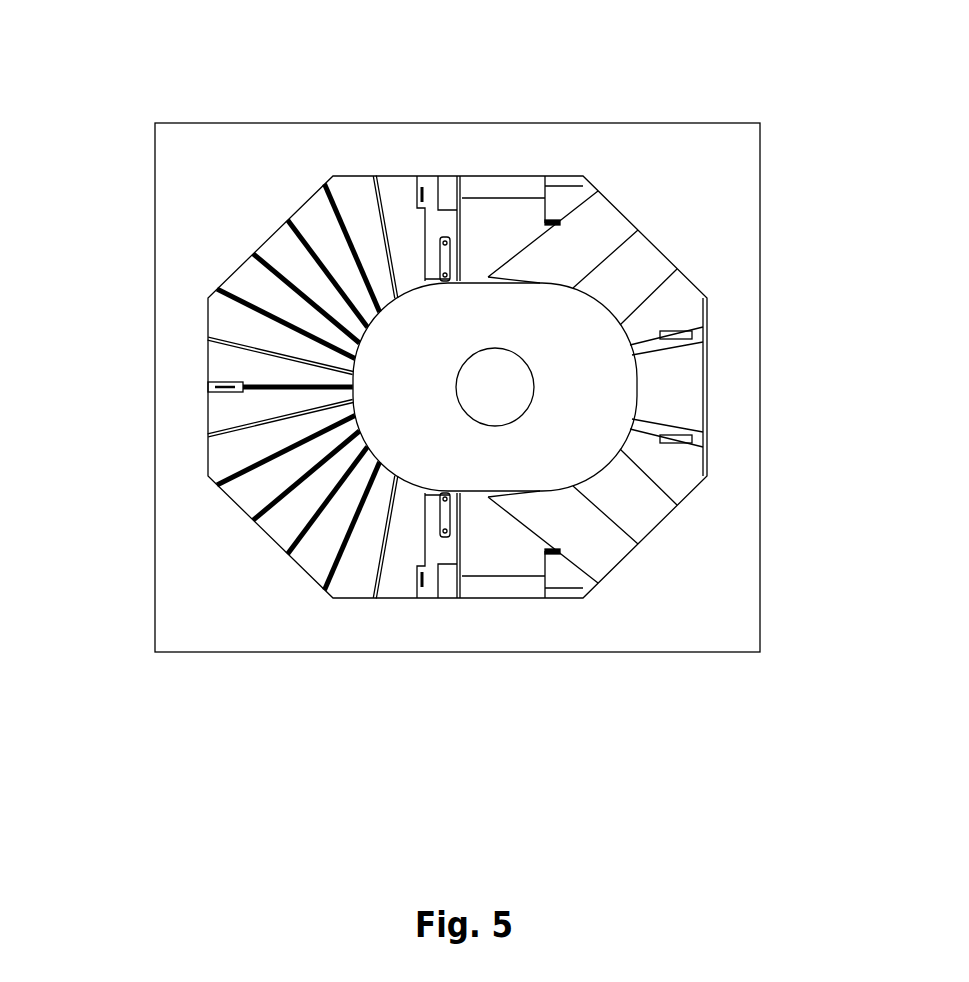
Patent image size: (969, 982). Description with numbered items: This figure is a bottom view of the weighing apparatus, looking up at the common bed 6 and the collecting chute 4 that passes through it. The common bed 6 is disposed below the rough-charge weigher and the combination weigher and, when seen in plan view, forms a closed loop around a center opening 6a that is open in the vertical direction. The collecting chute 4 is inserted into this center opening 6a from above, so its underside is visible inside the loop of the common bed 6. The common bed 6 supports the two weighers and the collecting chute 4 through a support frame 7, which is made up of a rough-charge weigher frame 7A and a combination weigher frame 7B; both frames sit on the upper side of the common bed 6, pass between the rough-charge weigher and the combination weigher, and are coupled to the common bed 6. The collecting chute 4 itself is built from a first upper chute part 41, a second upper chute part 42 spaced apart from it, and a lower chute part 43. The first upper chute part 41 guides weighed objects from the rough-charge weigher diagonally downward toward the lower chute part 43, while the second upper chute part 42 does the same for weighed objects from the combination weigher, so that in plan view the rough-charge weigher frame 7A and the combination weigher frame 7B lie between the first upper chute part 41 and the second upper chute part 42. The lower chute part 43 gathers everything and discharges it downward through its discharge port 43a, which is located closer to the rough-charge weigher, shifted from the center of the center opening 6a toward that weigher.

The collecting chute 4 is at (365, 568).
The common bed 6 is at (760, 181).
The center opening 6a is at (612, 220).
The support frame 7 is at (528, 752).
The rough-charge weigher frame 7A is at (493, 558).
The combination weigher frame 7B is at (452, 555).
The first upper chute part 41 is at (695, 368).
The second upper chute part 42 is at (228, 366).
The lower chute part 43 is at (583, 448).
The discharge port 43a is at (500, 372).